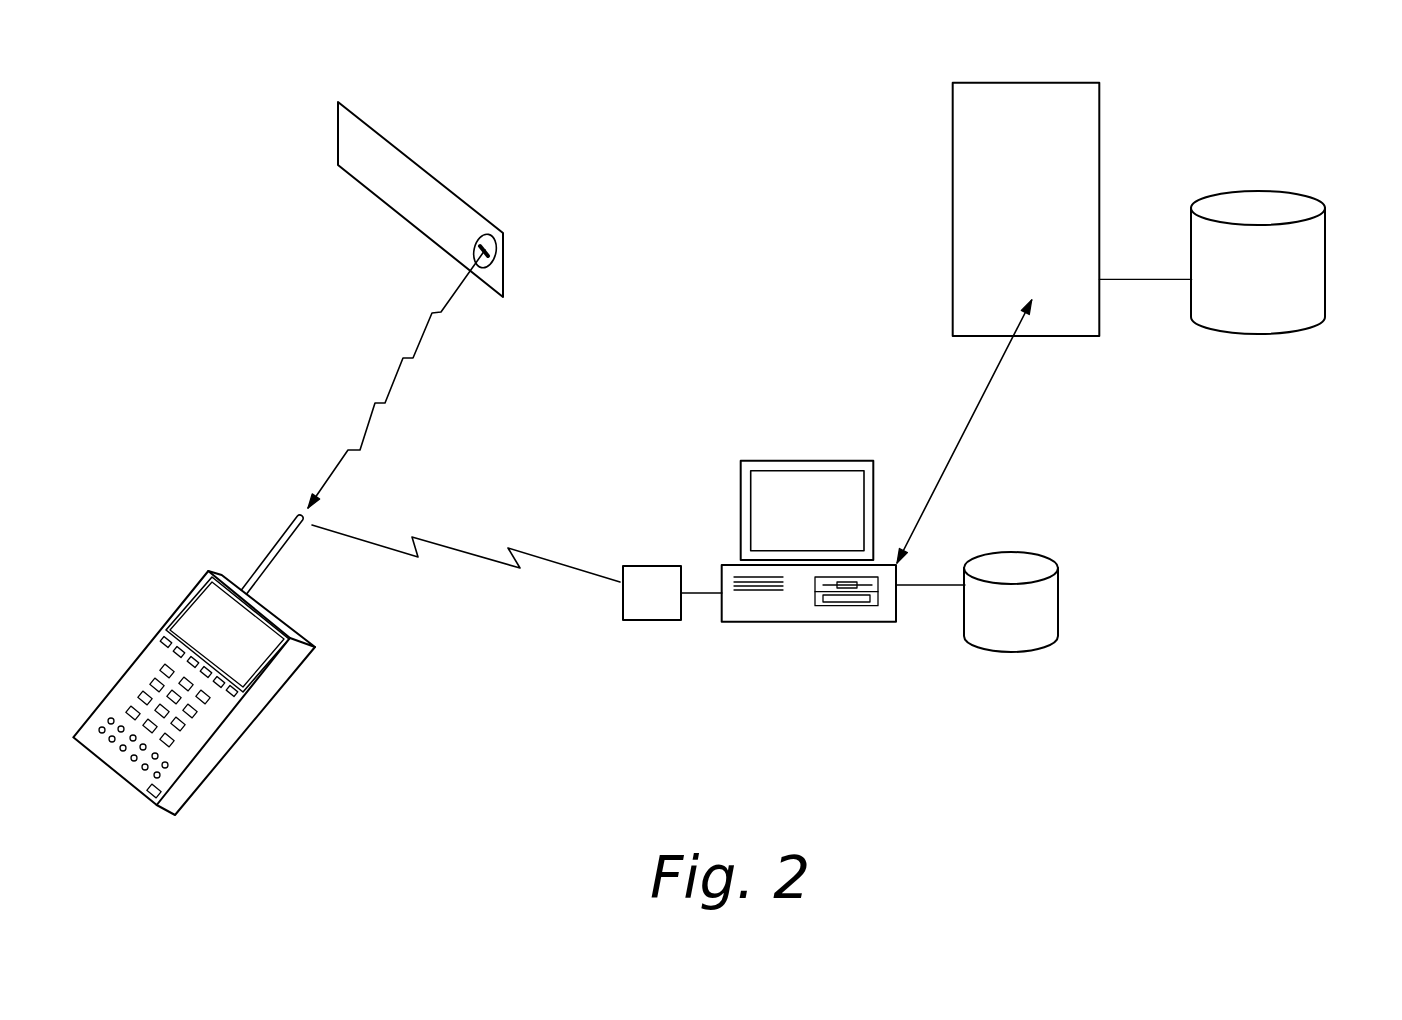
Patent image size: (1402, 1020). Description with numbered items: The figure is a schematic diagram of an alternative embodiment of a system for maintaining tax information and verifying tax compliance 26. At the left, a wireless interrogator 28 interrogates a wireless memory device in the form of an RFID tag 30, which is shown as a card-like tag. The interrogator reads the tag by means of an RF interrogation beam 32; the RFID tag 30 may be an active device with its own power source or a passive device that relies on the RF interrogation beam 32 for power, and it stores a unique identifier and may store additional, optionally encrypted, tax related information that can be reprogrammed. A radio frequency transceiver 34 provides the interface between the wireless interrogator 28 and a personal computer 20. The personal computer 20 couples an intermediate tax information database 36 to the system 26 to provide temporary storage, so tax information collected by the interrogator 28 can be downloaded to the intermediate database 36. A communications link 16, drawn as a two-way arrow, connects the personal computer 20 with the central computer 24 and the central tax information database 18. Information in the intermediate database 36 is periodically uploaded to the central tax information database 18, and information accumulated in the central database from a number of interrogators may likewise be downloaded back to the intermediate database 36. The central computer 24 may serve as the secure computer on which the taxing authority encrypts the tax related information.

The communications link 16 is at (970, 428).
The central tax information database 18 is at (1325, 298).
The personal computer 20 is at (798, 622).
The central computer 24 is at (1100, 105).
The system for maintaining tax information and verifying tax compliance 26 is at (993, 732).
The wireless interrogator 28 is at (233, 730).
The RFID tag 30 is at (463, 201).
The RF interrogation beam 32 is at (393, 383).
The radio frequency transceiver 34 is at (643, 622).
The intermediate tax information database 36 is at (1058, 618).